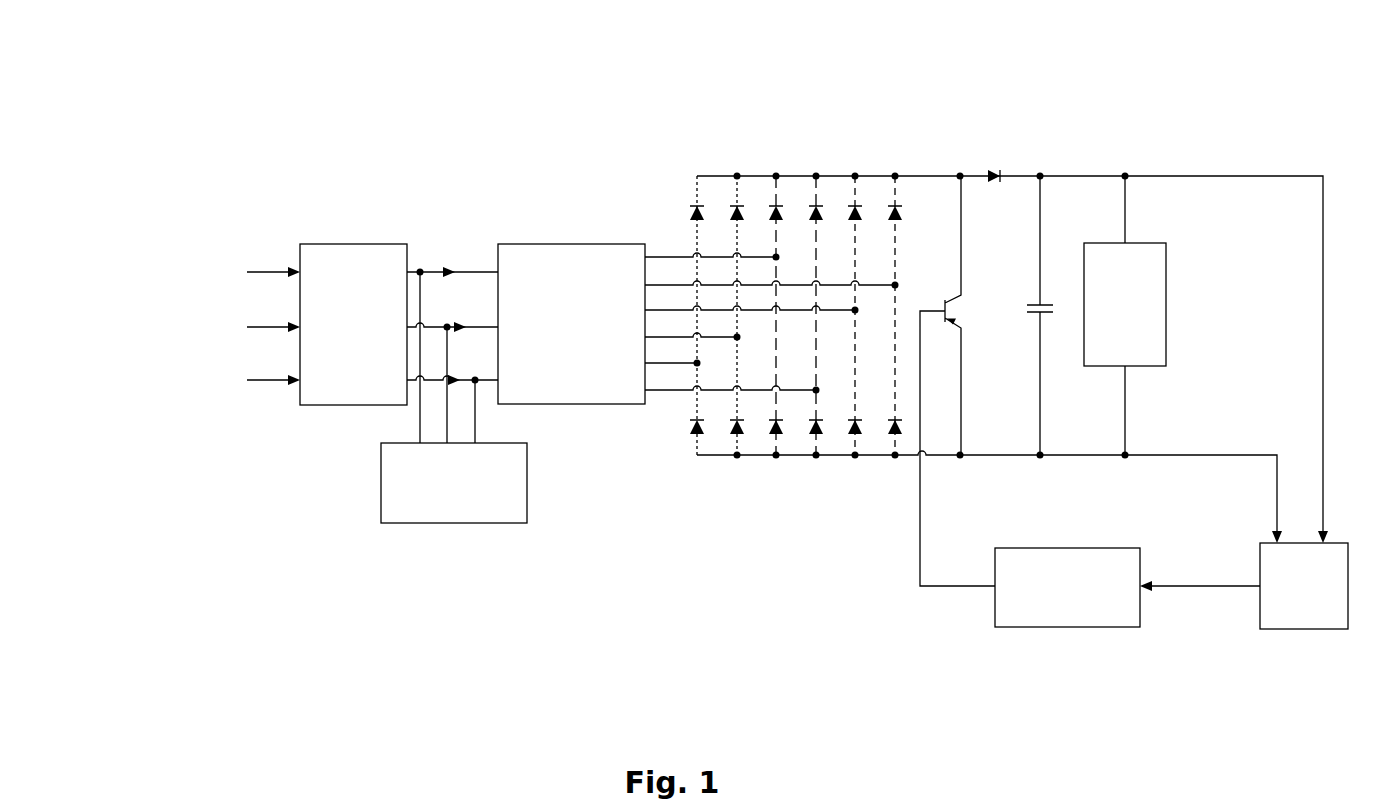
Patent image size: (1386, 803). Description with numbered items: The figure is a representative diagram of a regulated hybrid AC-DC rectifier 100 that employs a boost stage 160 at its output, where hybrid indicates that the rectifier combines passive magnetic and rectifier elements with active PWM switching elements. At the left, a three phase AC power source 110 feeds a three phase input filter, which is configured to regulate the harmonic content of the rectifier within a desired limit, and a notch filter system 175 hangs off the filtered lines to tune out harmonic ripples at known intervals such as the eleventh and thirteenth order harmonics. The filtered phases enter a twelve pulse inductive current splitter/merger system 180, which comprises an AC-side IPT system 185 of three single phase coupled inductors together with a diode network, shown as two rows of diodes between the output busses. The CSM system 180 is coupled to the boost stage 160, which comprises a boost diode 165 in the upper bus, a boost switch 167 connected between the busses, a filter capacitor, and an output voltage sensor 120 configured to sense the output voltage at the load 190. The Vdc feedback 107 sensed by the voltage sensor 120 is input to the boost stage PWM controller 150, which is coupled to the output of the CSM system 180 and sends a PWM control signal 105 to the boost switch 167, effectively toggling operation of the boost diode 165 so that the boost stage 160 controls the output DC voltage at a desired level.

The regulated hybrid AC-DC rectifier 100 is at (452, 82).
The AC power source 110 is at (194, 326).
The notch filter system 175 is at (455, 510).
The AC-side IPT system 185 is at (575, 252).
The 12 pulse inductive current splitter/merger (CSM) system 180 is at (500, 162).
The boost stage 160 is at (933, 167).
The boost diode 165 is at (998, 189).
The boost switch 167 is at (958, 381).
The load 190 is at (1150, 343).
The PWM control signal 105 is at (841, 576).
The boost stage PWM controller 150 is at (1052, 555).
The Vdc feedback 107 is at (1200, 627).
The output voltage sensor 120 is at (1313, 622).